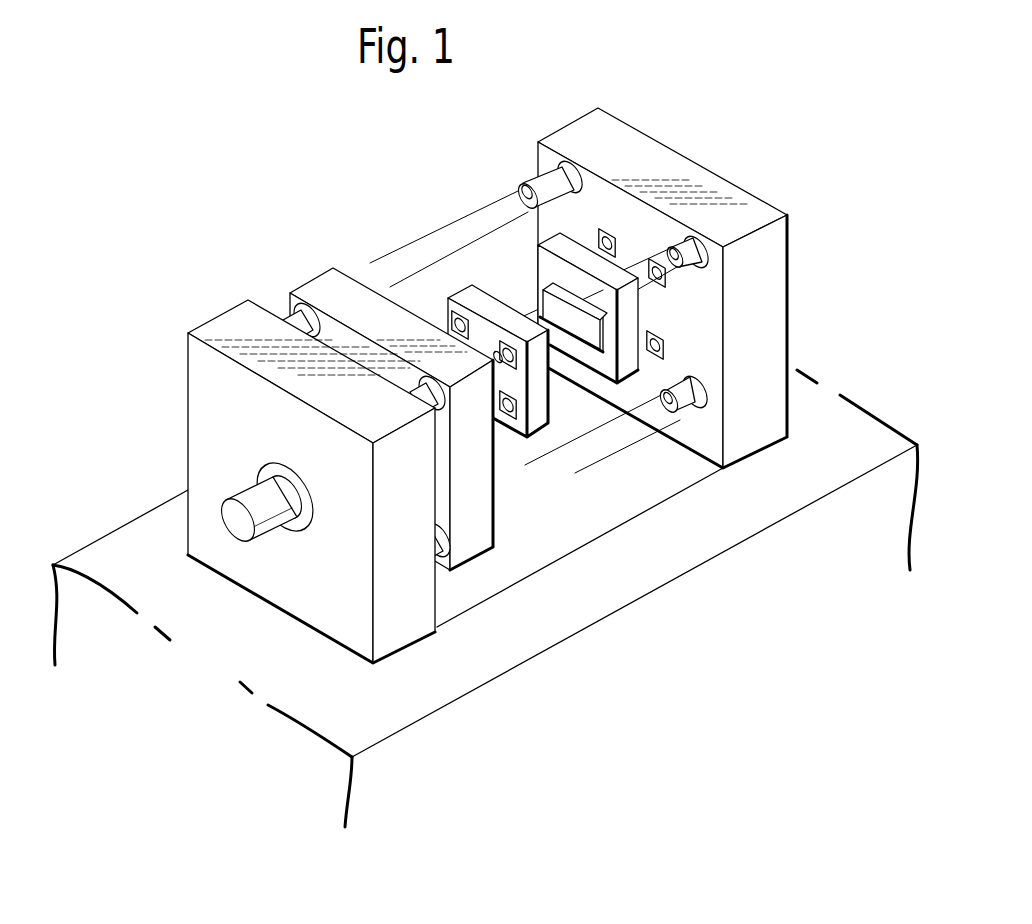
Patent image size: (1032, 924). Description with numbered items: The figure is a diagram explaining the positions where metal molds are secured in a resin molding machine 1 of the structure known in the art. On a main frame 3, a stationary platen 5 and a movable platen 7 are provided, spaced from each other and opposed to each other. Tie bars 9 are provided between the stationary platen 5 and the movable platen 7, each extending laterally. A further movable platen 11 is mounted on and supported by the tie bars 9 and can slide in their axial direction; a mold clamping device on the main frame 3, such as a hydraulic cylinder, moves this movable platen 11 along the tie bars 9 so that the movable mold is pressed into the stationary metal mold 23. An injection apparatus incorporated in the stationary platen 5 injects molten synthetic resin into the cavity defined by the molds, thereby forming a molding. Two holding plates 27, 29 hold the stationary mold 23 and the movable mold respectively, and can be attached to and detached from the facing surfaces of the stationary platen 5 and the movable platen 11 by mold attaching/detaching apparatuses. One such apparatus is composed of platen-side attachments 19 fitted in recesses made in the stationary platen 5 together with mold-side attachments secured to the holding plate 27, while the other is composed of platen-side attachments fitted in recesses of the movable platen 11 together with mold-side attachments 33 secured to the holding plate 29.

The resin molding machine 1 is at (355, 202).
The main frame 3 is at (353, 708).
The stationary platen 5 is at (625, 136).
The movable platen 7 is at (203, 430).
The tie bars 9 is at (524, 183).
The movable platen 11 is at (352, 312).
The platen-side attachments 19 is at (667, 342).
The stationary metal mold 23 is at (550, 303).
The holding plate 27 is at (608, 357).
The holding plate 29 is at (533, 405).
The mold-side attachments 33 is at (443, 310).